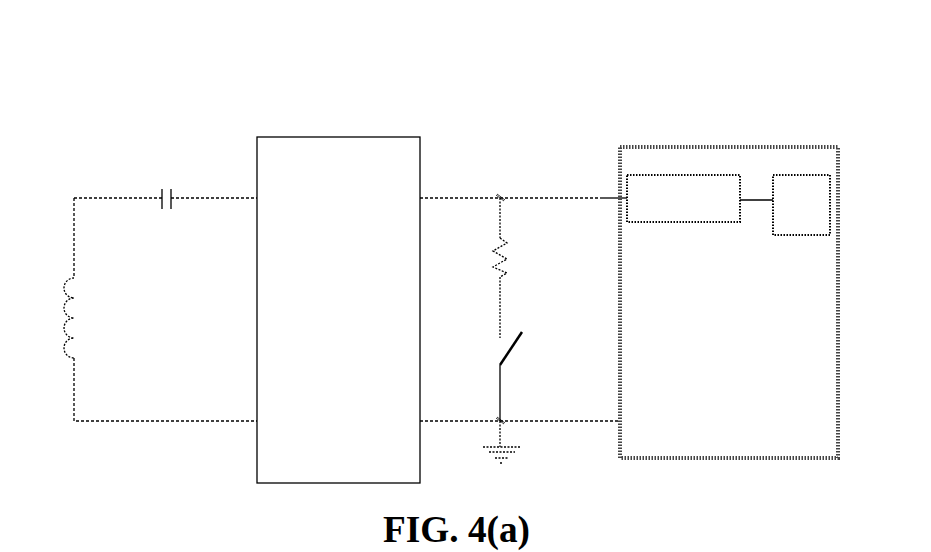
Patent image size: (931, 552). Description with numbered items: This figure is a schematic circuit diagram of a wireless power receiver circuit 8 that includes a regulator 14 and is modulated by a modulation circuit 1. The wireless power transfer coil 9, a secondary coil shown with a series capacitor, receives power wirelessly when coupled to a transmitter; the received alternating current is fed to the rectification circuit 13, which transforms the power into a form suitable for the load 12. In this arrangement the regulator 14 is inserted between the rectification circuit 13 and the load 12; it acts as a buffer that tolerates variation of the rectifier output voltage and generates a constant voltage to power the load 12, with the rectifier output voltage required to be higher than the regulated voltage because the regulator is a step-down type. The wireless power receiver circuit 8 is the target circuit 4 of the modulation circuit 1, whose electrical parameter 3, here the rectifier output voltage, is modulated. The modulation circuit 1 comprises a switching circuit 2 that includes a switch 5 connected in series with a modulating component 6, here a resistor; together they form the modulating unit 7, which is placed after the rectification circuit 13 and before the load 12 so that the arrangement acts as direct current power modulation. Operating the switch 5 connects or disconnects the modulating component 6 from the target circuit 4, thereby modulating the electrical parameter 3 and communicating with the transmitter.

The target circuit 4 is at (166, 74).
The wireless power receiver circuit 8 is at (135, 228).
The wireless power transfer coil 9 is at (66, 305).
The rectification circuit 13 is at (350, 137).
The electrical parameter 3 is at (508, 162).
The modulation circuit 1 is at (489, 289).
The modulating component 6 is at (505, 275).
The modulating unit 7 is at (485, 318).
The switch 5 is at (523, 346).
The switching circuit 2 is at (526, 388).
The regulator 14 is at (685, 175).
The load 12 is at (790, 175).